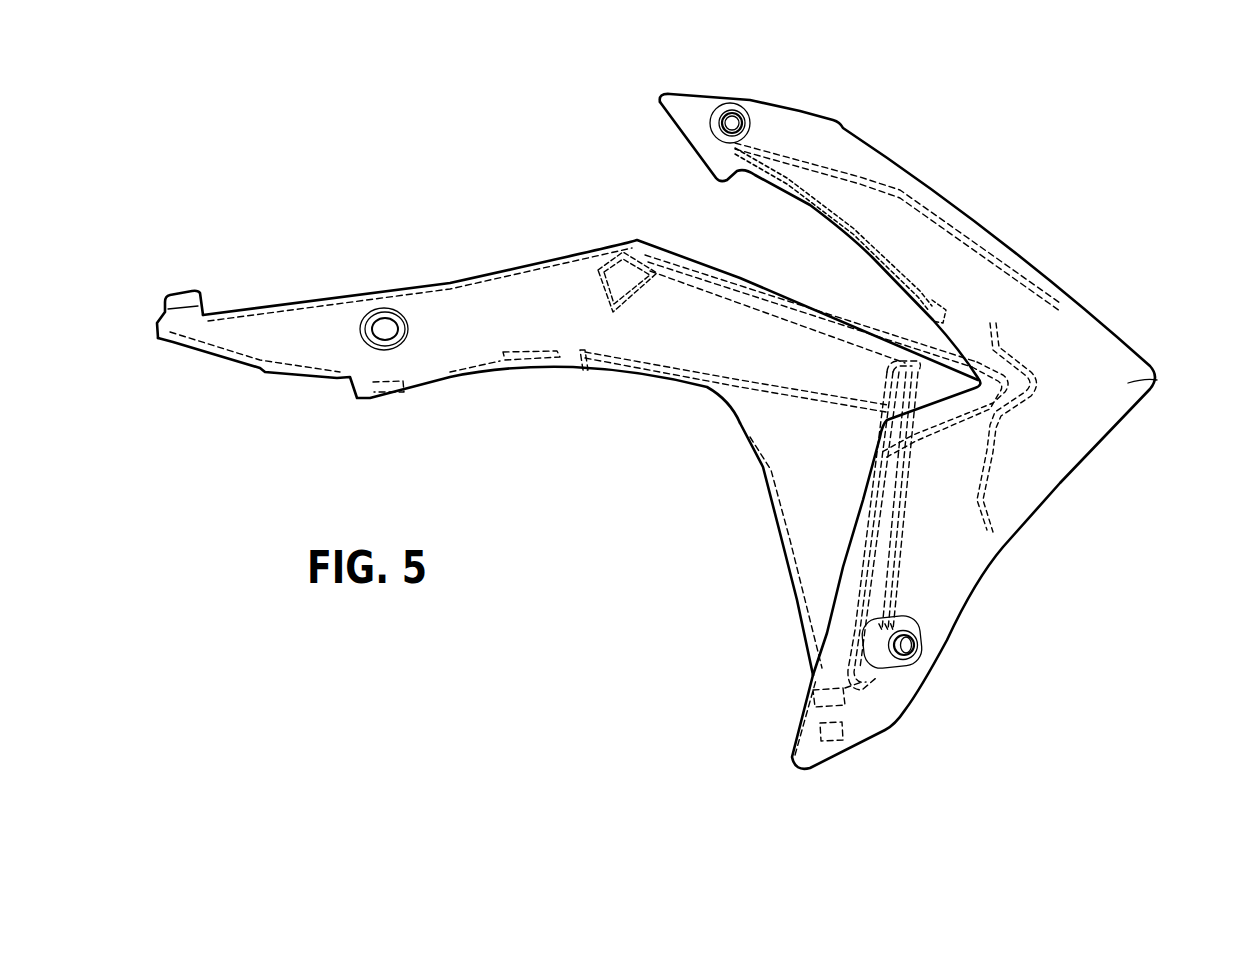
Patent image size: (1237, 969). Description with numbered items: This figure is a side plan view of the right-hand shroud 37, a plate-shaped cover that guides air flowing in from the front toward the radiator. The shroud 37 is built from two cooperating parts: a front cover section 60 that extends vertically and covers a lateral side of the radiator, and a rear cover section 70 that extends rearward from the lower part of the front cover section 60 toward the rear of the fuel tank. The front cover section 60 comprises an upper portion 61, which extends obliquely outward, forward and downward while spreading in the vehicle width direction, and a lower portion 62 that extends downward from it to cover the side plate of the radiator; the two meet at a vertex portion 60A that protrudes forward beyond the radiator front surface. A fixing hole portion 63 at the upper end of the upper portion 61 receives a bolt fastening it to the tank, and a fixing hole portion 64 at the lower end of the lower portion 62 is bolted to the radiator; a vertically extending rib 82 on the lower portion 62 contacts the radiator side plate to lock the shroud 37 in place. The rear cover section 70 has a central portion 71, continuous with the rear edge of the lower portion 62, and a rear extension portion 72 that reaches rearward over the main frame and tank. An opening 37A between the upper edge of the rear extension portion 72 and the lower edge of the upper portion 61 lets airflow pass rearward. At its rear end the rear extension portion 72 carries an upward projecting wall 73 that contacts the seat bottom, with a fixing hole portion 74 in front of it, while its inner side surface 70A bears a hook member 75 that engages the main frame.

The shroud 37 is at (1010, 150).
The opening 37A is at (832, 270).
The front cover section 60 is at (1082, 302).
The vertex portion 60A is at (1157, 380).
The upper portion 61 is at (948, 250).
The lower portion 62 is at (940, 585).
The fixing hole portion 63 is at (720, 103).
The fixing hole portion 64 is at (873, 662).
The rear cover section 70 is at (577, 250).
The inner side surface 70A is at (578, 305).
The central portion 71 is at (802, 547).
The rear extension portion 72 is at (483, 298).
The projecting wall 73 is at (182, 295).
The fixing hole portion 74 is at (373, 317).
The hook member 75 is at (607, 257).
The rib 82 is at (897, 553).